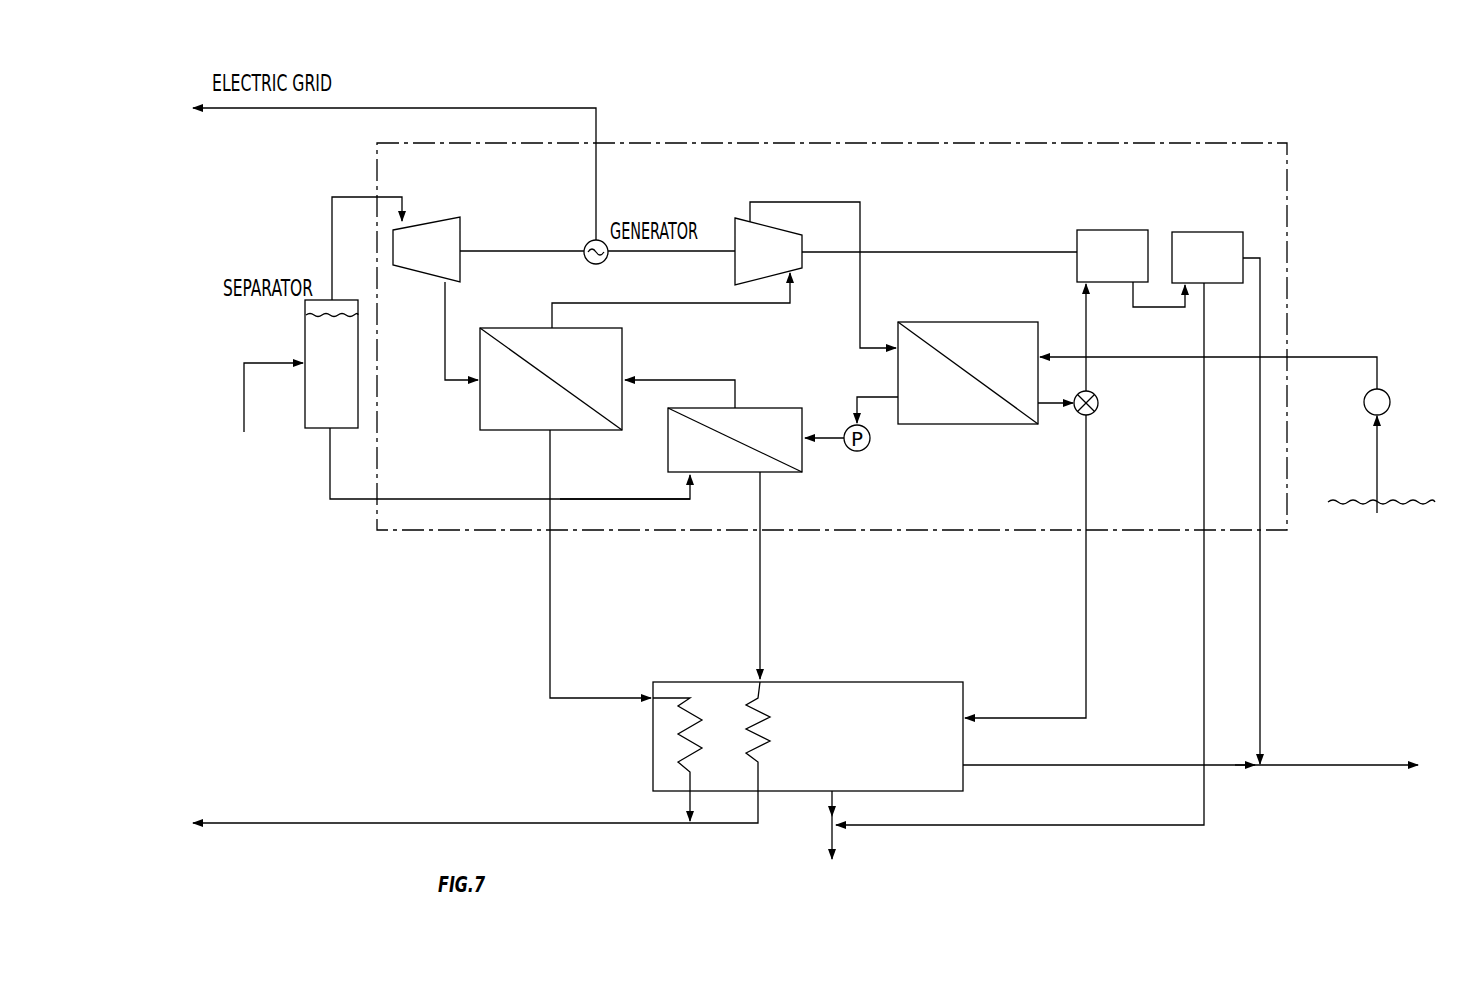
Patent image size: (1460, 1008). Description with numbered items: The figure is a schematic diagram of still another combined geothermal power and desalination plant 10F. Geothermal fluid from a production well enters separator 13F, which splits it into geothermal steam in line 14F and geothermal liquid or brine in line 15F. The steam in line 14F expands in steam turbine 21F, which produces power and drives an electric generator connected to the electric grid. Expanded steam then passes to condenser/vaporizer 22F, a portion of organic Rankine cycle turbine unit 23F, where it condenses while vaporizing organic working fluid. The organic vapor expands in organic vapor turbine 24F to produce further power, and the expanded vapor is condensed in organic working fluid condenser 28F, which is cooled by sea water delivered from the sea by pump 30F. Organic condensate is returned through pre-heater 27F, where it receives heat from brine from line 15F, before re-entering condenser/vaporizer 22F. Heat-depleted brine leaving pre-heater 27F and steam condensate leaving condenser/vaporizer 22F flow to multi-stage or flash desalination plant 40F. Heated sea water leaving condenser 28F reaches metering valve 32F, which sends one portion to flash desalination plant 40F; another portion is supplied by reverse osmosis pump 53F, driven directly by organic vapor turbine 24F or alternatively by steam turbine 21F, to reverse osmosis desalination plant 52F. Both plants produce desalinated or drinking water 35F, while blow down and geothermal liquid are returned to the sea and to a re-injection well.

The combined geothermal power and desalination plant 10F is at (212, 56).
The separator 13F is at (302, 307).
The geothermal steam line 14F is at (331, 200).
The geothermal liquid or brine line 15F is at (327, 497).
The steam turbine 21F is at (432, 220).
The condenser/vaporizer 22F is at (495, 327).
The organic combined cycle Rankine cycle turbine unit 23F is at (540, 509).
The organic vapor turbine 24F is at (793, 231).
The pre-heater 27F is at (768, 407).
The organic working fluid condenser 28F is at (937, 320).
The sea water pump 30F is at (1365, 407).
The metering valve 32F is at (1077, 413).
The desalinated or drinking water 35F is at (1325, 768).
The multi-stage or flash desalination plant 40F is at (943, 682).
The reverse osmosis desalination plant 52F is at (1233, 232).
The reverse osmosis pump 53F is at (1145, 230).